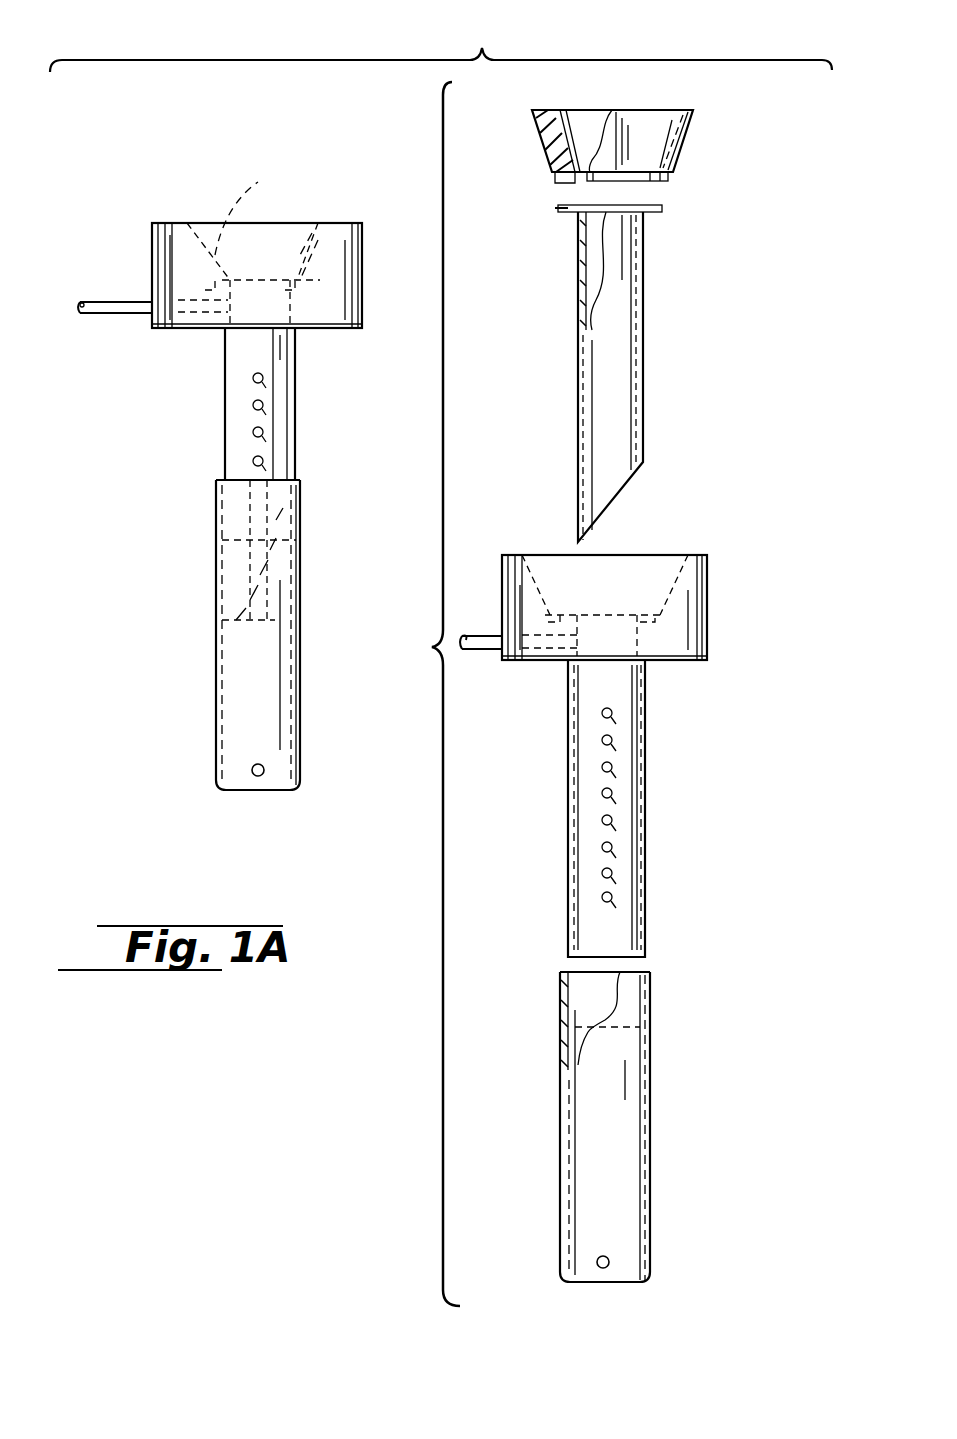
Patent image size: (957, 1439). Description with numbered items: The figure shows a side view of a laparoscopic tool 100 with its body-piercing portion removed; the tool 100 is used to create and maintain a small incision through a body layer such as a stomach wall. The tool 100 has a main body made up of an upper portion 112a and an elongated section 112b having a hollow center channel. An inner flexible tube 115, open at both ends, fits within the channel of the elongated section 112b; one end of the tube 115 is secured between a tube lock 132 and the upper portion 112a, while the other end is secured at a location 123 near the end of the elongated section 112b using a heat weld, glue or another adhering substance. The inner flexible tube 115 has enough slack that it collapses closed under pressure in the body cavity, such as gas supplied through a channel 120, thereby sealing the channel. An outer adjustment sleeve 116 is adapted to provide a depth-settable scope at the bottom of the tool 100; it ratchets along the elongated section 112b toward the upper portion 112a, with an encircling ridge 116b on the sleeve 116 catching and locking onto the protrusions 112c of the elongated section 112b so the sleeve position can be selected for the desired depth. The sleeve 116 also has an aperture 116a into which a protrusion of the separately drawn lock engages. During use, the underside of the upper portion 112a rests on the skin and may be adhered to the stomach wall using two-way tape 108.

The laparoscopic tool 100 is at (483, 42).
The two-way tape 108 is at (350, 330).
The upper portion 112a is at (362, 268).
The elongated section 112b is at (295, 432).
The protrusions 112c is at (617, 818).
The inner flexible tube 115 is at (643, 296).
The outer adjustment sleeve 116 is at (300, 698).
The aperture 116a is at (260, 776).
The encircling ridge 116b is at (312, 497).
The channel 120 is at (103, 314).
The location 123 is at (222, 612).
The tube lock 132 is at (240, 185).